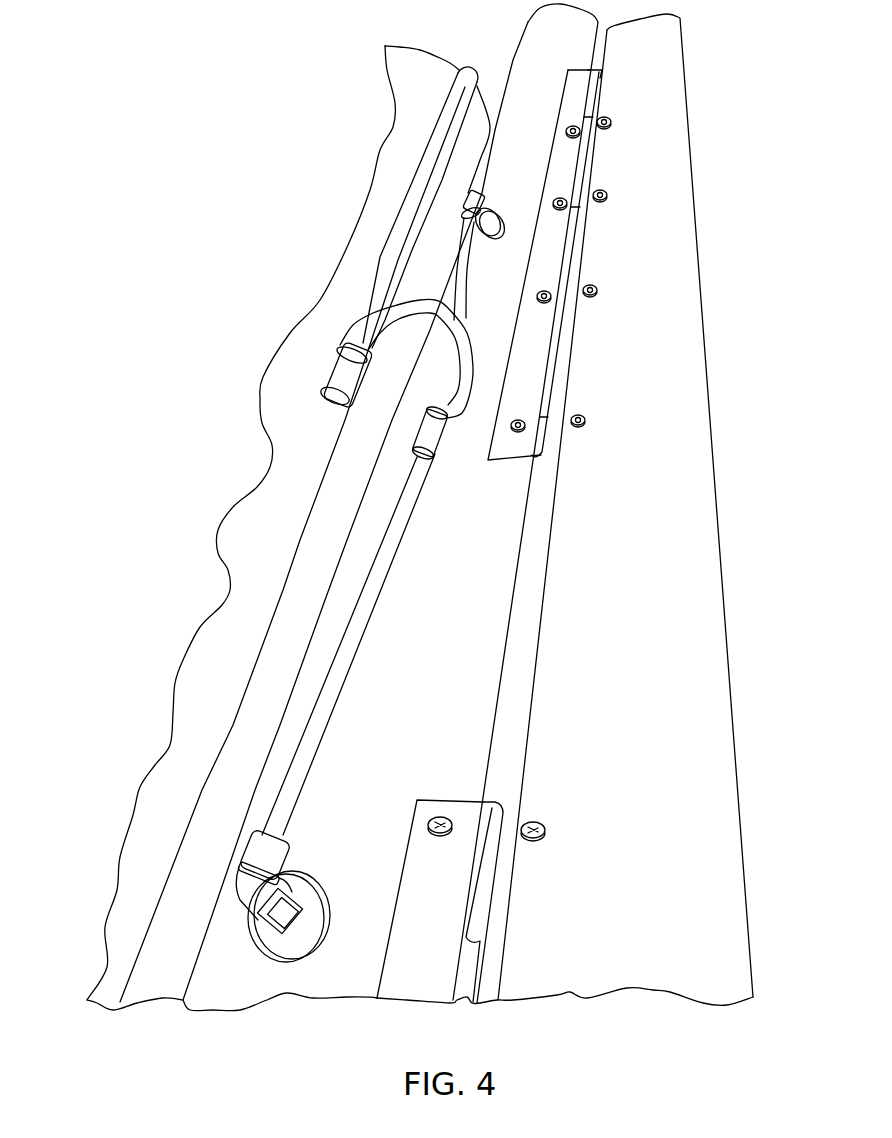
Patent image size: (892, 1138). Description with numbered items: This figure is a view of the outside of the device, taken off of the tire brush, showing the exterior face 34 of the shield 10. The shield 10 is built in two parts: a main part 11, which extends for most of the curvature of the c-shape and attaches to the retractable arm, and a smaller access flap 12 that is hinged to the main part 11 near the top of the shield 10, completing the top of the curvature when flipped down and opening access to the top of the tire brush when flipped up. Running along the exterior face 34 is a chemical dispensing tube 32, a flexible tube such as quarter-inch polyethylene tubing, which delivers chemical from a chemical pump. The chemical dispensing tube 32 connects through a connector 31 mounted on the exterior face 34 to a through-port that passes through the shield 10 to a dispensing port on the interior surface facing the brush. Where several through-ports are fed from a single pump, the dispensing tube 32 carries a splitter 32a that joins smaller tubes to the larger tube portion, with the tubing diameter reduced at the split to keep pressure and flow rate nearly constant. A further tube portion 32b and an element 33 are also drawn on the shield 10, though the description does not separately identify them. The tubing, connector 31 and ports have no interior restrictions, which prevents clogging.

The shield 10 is at (473, 650).
The main part 11 is at (335, 783).
The access flap 12 is at (653, 487).
The connector 31 is at (253, 900).
The chemical dispensing tube 32 is at (315, 728).
The splitter 32a is at (437, 447).
The hose loop 32b is at (395, 308).
The bracket plate 33 is at (548, 240).
The exterior face 34 is at (347, 594).